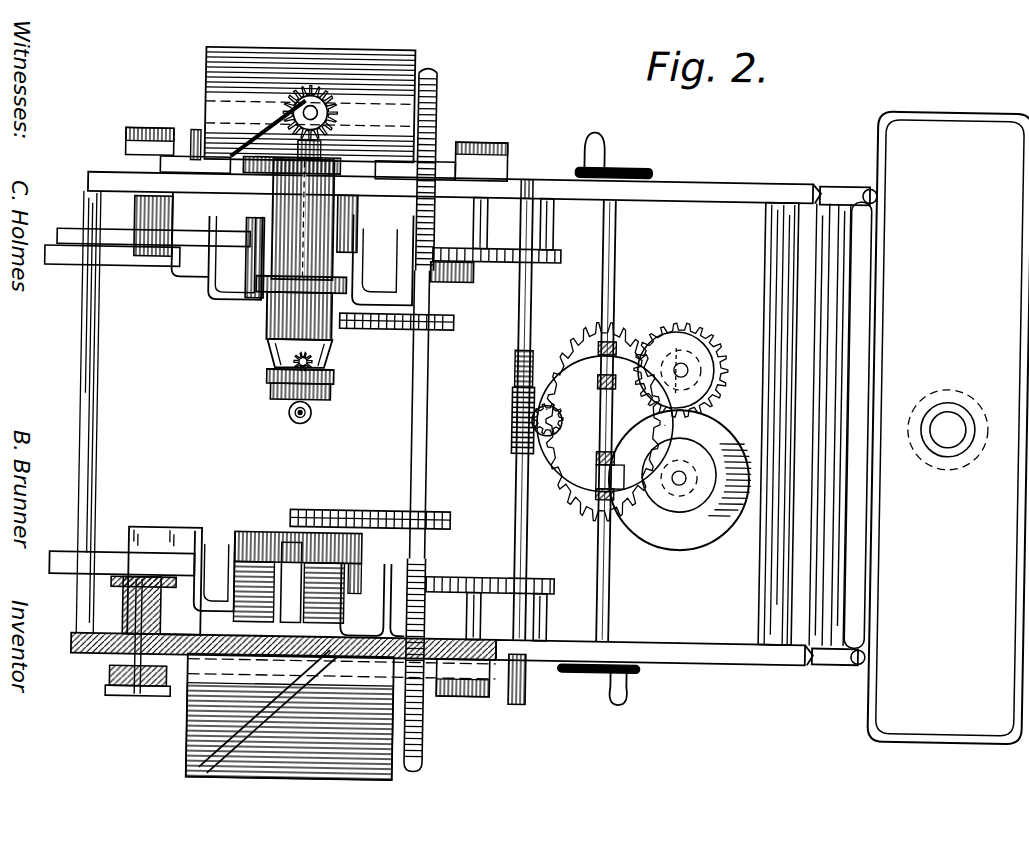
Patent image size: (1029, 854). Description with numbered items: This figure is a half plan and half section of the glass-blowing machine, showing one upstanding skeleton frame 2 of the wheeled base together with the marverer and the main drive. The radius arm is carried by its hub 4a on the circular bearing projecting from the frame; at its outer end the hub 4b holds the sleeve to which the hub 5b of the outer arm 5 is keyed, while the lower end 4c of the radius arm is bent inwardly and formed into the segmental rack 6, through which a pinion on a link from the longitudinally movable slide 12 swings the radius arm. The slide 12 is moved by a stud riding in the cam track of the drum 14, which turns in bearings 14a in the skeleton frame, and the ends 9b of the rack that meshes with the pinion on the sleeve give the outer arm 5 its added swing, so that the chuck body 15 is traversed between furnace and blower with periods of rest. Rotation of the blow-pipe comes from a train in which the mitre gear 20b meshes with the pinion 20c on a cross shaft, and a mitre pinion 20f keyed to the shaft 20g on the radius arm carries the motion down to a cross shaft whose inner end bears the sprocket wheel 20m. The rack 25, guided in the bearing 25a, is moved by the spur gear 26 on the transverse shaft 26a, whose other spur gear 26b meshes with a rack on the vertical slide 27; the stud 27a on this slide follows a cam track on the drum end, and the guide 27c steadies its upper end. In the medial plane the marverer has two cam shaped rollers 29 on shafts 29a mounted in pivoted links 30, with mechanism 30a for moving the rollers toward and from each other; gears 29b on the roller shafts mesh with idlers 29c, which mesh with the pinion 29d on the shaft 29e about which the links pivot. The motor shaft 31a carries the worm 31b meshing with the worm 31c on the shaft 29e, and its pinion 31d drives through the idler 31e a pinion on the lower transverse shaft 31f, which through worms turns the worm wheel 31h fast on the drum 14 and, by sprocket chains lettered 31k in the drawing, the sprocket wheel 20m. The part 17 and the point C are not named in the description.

The skeleton frame 2 is at (103, 190).
The hub of radius arm 4a is at (244, 242).
The outer hub of radius arm 4b is at (255, 294).
The lower end of radius arm 4c is at (182, 296).
The outer arm 5 is at (274, 357).
The hub of outer arm 5b is at (288, 311).
The segmental rack 6 is at (250, 304).
The ends of segmental rack 9b is at (178, 170).
The slide 12 is at (478, 268).
The drum 14 is at (340, 158).
The bearings 14a is at (135, 131).
The chuck body 15 is at (270, 387).
The pin 17 is at (292, 424).
The mitre gear 20b is at (329, 383).
The pinion 20c is at (342, 153).
The mitre pinion 20f is at (335, 153).
The shaft 20g is at (302, 113).
The sprocket wheel 20m is at (444, 328).
The rack 25 is at (60, 278).
The bearing 25a is at (134, 306).
The spur gear 26 is at (113, 594).
The transverse shaft 26a is at (127, 662).
The spur gear 26b is at (143, 136).
The vertical slide 27 is at (192, 152).
The stud 27a is at (203, 148).
The guide 27c is at (205, 152).
The cam shaped rollers 29 is at (685, 350).
The roller shafts 29a is at (679, 359).
The gears 29b is at (709, 343).
The idlers 29c is at (601, 298).
The pinion 29d is at (533, 437).
The shaft 29e is at (547, 418).
The links 30 is at (578, 378).
The mechanism 30a is at (610, 558).
The main shaft 31a is at (526, 367).
The worm 31b is at (513, 428).
The worm 31c is at (520, 410).
The pinion 31d is at (546, 261).
The idler 31e is at (510, 275).
The lower transverse shaft 31f is at (425, 420).
The worm wheel 31h is at (435, 121).
The guide 31k is at (359, 326).
The center pin C is at (310, 423).